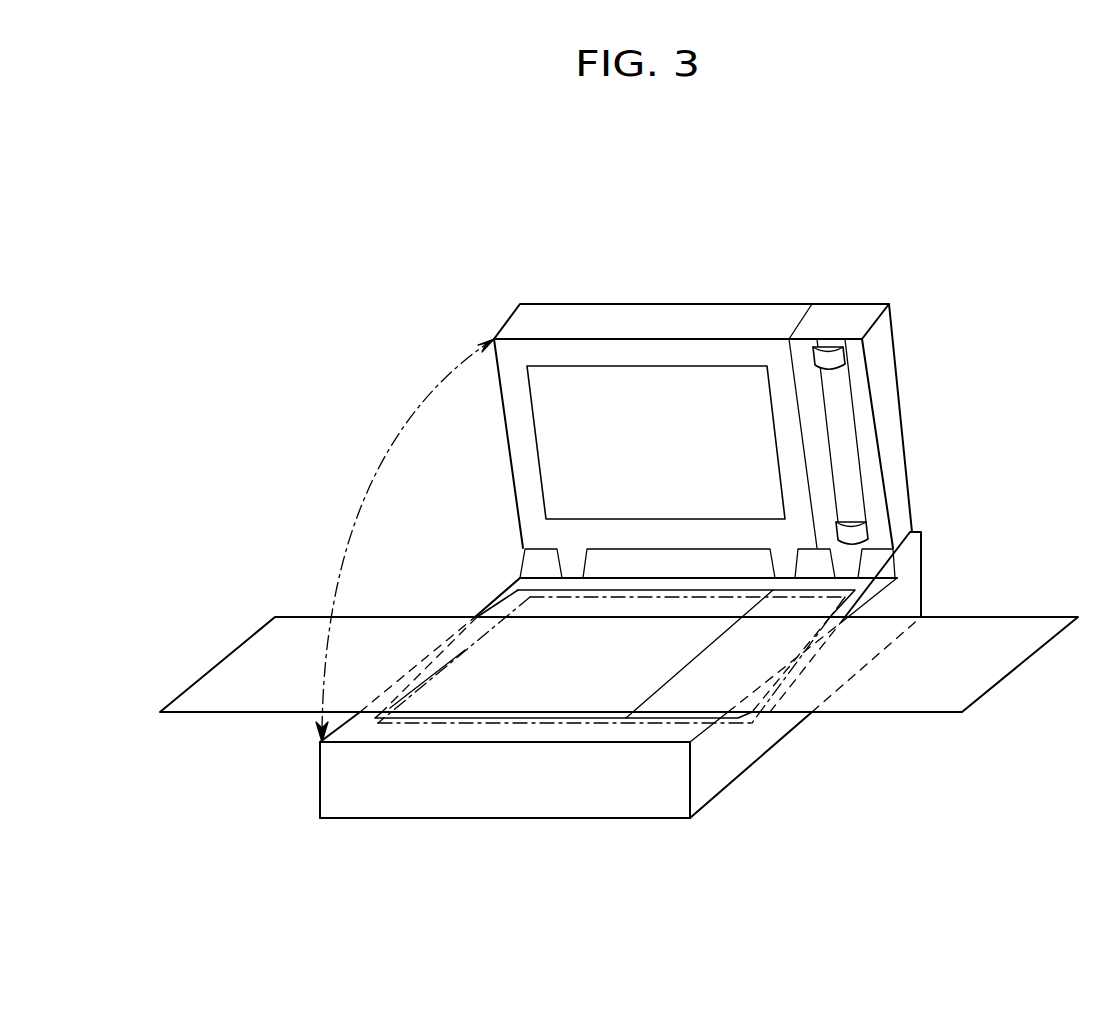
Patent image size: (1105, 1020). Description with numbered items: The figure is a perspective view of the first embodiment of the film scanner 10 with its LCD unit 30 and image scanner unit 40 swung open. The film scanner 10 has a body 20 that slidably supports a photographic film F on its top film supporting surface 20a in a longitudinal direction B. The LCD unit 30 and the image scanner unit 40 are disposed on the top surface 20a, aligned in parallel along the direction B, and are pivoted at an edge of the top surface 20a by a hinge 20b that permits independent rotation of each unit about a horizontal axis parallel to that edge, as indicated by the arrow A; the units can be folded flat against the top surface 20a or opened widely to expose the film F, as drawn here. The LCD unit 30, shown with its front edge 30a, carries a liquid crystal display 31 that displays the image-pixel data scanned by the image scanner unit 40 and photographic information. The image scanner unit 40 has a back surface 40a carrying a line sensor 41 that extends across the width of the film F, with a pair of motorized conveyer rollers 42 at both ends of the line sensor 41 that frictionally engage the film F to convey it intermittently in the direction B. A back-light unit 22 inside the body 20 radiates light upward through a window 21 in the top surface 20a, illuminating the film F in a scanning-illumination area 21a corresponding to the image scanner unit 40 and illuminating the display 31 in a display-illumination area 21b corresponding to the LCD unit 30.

The film scanner 10 is at (922, 352).
The body 20 is at (617, 797).
The top film supporting surface 20a is at (355, 742).
The hinge 20b is at (922, 552).
The window 21 is at (515, 727).
The scanning-illumination area 21a is at (722, 665).
The display-illumination area 21b is at (466, 695).
The back-light unit 22 is at (470, 632).
The liquid crystal display unit 30 is at (645, 320).
The front edge of cover 30a is at (558, 355).
The liquid crystal display 31 is at (717, 368).
The image scanner unit 40 is at (863, 320).
The back surface 40a is at (876, 455).
The line sensor 41 is at (846, 408).
The motorized conveyer rollers 42 is at (823, 352).
The arrow A is at (405, 540).
The photographic film F is at (1033, 632).
The longitudinal direction B is at (1058, 677).